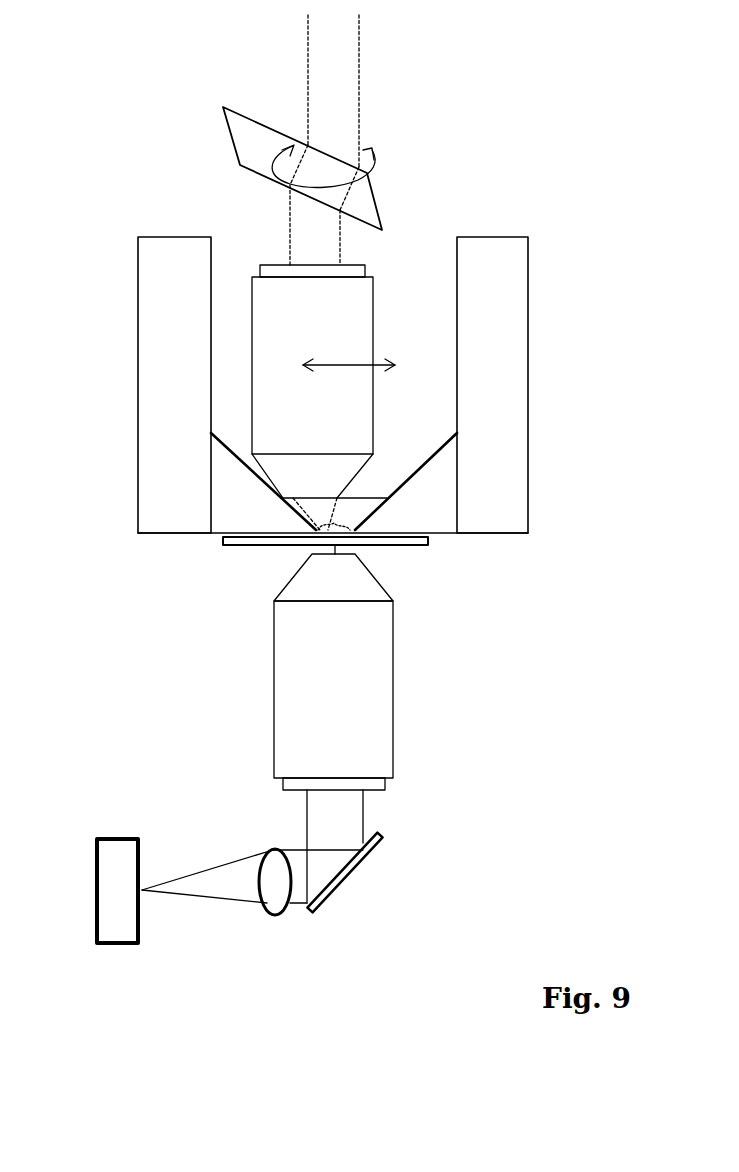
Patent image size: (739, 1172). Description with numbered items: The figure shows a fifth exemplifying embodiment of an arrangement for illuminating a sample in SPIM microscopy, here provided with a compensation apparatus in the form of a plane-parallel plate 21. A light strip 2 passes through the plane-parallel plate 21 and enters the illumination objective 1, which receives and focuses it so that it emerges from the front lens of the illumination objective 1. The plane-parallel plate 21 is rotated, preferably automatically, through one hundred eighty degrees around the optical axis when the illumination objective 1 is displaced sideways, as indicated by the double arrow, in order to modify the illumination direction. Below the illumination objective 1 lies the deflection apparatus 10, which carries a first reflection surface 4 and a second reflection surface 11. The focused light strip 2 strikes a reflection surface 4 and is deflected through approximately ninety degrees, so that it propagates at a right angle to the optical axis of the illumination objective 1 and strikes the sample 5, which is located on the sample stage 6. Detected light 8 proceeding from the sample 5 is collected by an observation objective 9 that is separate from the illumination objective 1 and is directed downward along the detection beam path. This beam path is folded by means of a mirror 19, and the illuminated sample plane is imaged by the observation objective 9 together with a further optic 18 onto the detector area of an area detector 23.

The illumination objective 1 is at (347, 348).
The light strip 2 is at (353, 80).
The first reflection surface 4 is at (227, 445).
The sample 5 is at (337, 500).
The sample stage 6 is at (268, 547).
The detected light 8 is at (352, 807).
The observation objective 9 is at (382, 697).
The deflection apparatus 10 is at (125, 407).
The second reflection surface 11 is at (433, 450).
The further optic 18 is at (273, 850).
The mirror 19 is at (352, 877).
The plane-parallel plate 21 is at (358, 202).
The area detector 23 is at (107, 878).